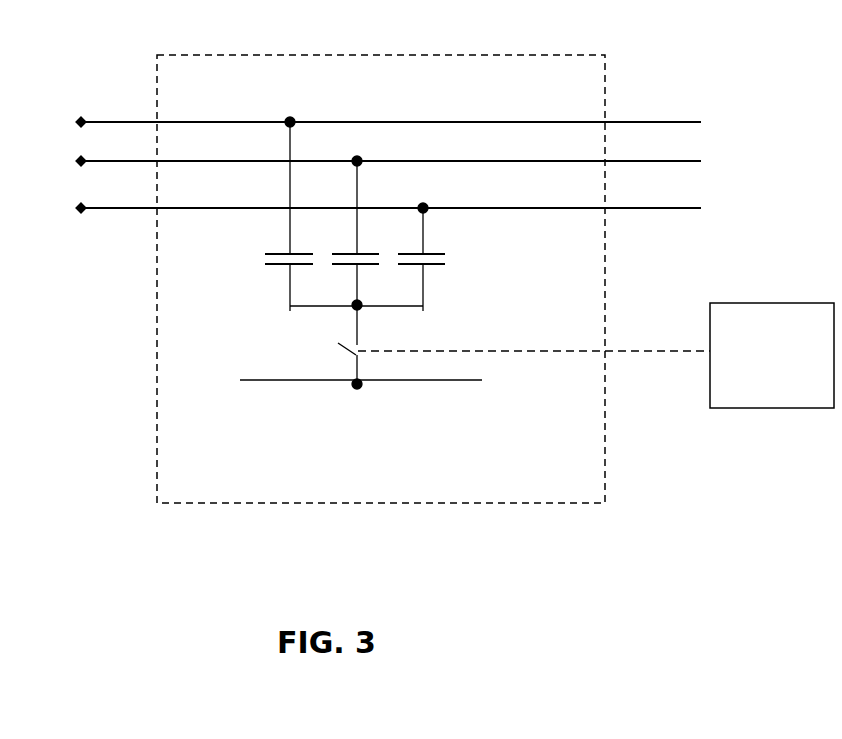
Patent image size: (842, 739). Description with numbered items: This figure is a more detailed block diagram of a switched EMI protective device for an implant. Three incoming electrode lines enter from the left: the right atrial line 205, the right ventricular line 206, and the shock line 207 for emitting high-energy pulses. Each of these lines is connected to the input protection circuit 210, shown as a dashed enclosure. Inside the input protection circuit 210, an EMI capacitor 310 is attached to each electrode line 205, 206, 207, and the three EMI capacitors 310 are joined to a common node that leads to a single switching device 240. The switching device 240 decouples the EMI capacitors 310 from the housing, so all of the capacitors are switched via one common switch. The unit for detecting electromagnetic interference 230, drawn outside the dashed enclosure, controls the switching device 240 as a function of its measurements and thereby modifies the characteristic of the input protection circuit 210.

The right atrial electrode line 205 is at (360, 122).
The right ventricular electrode line 206 is at (360, 161).
The shock line 207 is at (360, 208).
The input protection circuit 210 is at (381, 256).
The unit for detecting electromagnetic interference 230 is at (596, 355).
The switching device 240 is at (361, 347).
The EMI capacitors 310 is at (394, 214).